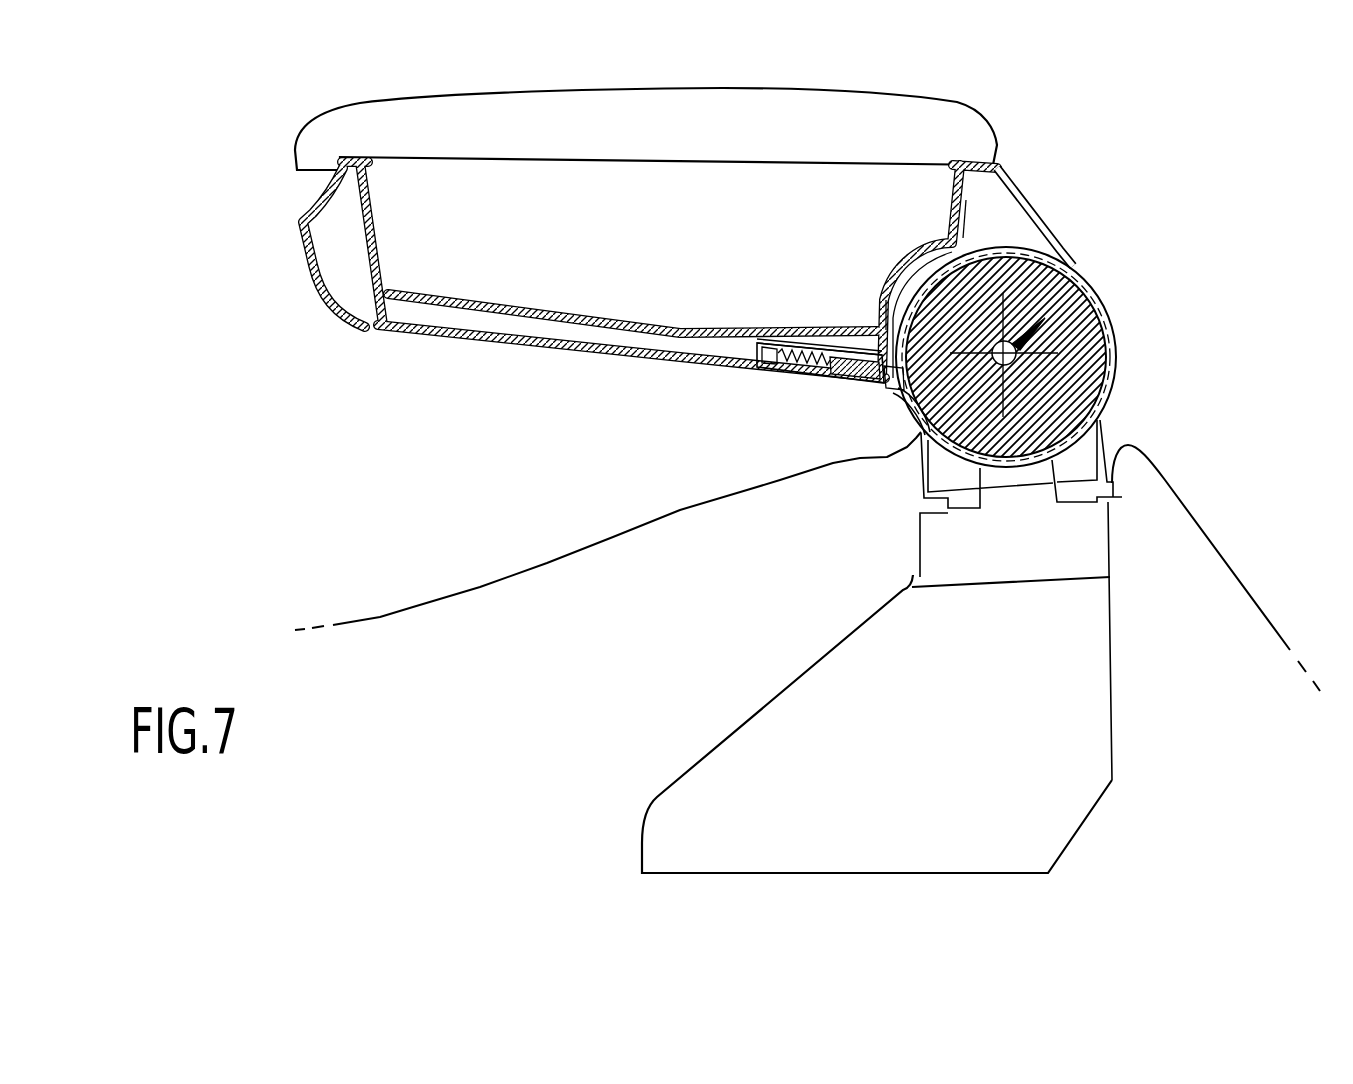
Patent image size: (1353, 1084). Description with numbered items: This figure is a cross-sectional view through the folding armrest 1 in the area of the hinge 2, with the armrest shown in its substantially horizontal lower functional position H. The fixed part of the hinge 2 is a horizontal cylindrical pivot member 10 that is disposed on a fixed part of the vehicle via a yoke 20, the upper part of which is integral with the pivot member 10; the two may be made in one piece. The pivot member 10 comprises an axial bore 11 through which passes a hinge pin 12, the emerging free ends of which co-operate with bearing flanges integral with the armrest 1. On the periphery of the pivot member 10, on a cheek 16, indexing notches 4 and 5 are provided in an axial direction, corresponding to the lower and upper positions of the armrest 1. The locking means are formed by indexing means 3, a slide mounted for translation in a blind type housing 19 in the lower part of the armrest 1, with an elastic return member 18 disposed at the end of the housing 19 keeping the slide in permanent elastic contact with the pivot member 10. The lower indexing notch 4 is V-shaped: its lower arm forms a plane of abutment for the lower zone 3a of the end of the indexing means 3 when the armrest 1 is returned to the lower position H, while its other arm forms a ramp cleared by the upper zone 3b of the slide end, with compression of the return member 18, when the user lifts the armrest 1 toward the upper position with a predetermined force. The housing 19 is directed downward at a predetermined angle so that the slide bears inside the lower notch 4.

The folding armrest 1 is at (517, 193).
The hinge 2 is at (1116, 309).
The indexing means 3 is at (850, 355).
The lower zone of the end of indexing means 3a is at (900, 393).
The upper zone of the end of indexing means 3b is at (878, 323).
The lower indexing notch 4 is at (920, 433).
The indexing notch 5 is at (975, 252).
The pivot member 10 is at (1110, 347).
The axial bore 11 is at (1013, 343).
The hinge pin 12 is at (1110, 403).
The cheek 16 is at (1037, 250).
The elastic return member 18 is at (795, 377).
The blind type housing 19 is at (797, 340).
The yoke 20 is at (1112, 650).
The lower functional position H is at (317, 368).